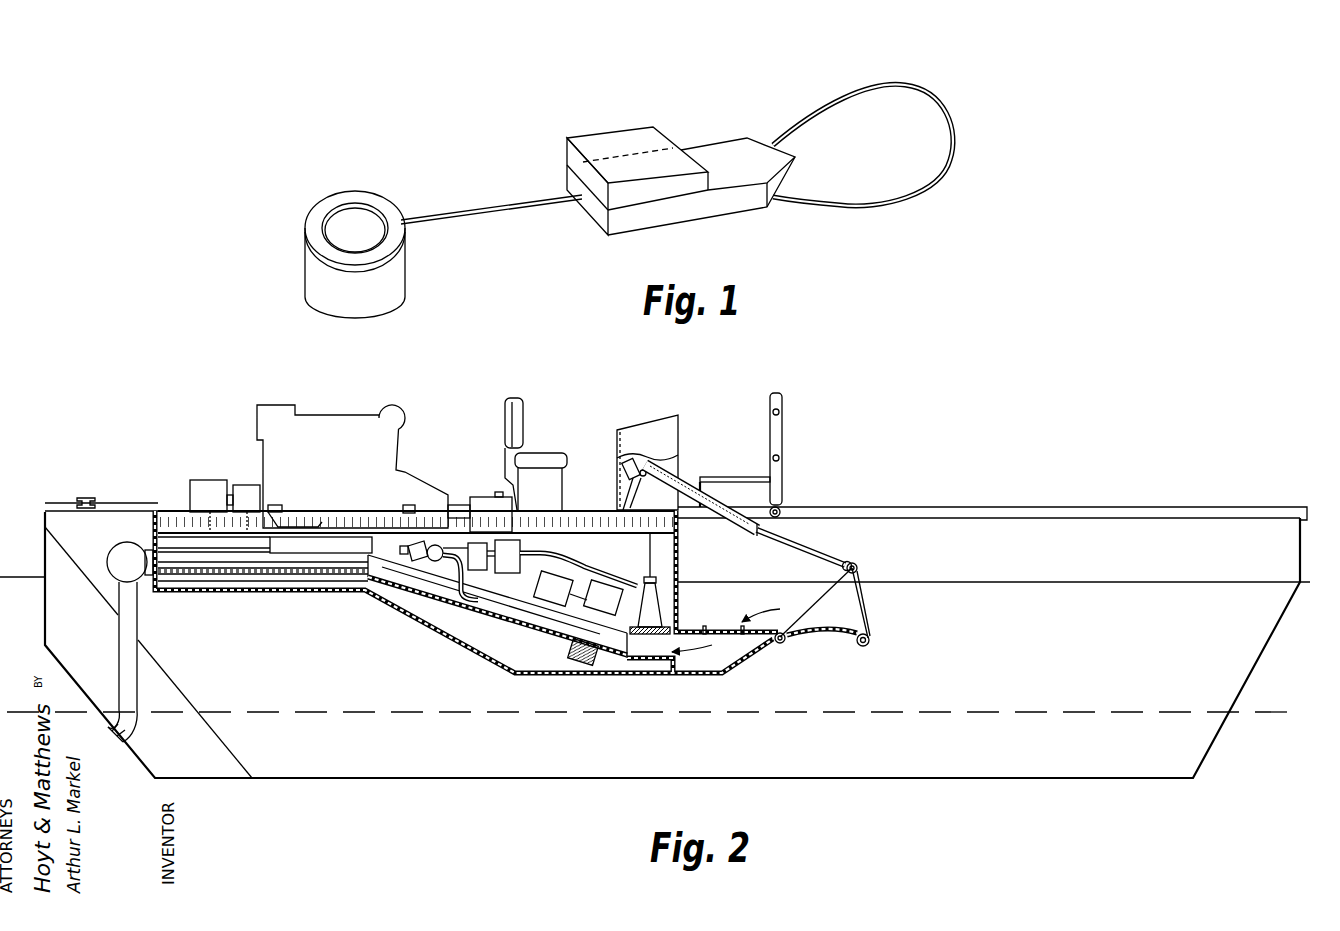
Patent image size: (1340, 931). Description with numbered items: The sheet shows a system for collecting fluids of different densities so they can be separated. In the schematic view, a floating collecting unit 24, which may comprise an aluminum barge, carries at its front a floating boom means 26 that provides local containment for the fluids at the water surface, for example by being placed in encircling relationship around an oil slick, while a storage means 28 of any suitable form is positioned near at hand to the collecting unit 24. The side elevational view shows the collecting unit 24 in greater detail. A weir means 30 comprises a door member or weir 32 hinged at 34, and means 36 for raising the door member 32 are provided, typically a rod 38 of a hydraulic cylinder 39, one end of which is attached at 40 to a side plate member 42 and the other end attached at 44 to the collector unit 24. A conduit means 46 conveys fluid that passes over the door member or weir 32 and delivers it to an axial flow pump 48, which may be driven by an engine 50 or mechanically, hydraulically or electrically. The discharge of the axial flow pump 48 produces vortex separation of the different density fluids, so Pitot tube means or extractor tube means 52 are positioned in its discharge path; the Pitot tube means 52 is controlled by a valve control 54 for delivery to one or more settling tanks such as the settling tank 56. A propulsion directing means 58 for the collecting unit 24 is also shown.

In FIG. 1, the floating collecting unit 24 is at (712, 107).
In FIG. 2, the floating collecting unit 24 is at (932, 462).
In FIG. 1, the floating boom means 26 is at (948, 108).
In FIG. 1, the storage means 28 is at (368, 168).
In FIG. 2, the weir means 30 is at (820, 686).
In FIG. 2, the door member or weir 32 is at (838, 638).
In FIG. 2, the hinge 34 is at (783, 645).
In FIG. 2, the means for raising door member 36 is at (838, 548).
In FIG. 2, the rod 38 is at (772, 538).
In FIG. 2, the hydraulic cylinder 39 is at (733, 524).
In FIG. 2, the attachment point to side plate member 40 is at (858, 565).
In FIG. 2, the side plate member 42 is at (858, 598).
In FIG. 2, the attachment point to collector unit 44 is at (643, 468).
In FIG. 2, the conduit means 46 is at (745, 676).
In FIG. 2, the axial flow pump 48 is at (583, 666).
In FIG. 2, the engine 50 is at (563, 583).
In FIG. 2, the Pitot tube means or extractor tube means 52 is at (463, 618).
In FIG. 2, the valve control 54 is at (427, 560).
In FIG. 2, the settling tank 56 is at (307, 543).
In FIG. 2, the propulsion directing means 58 is at (150, 630).